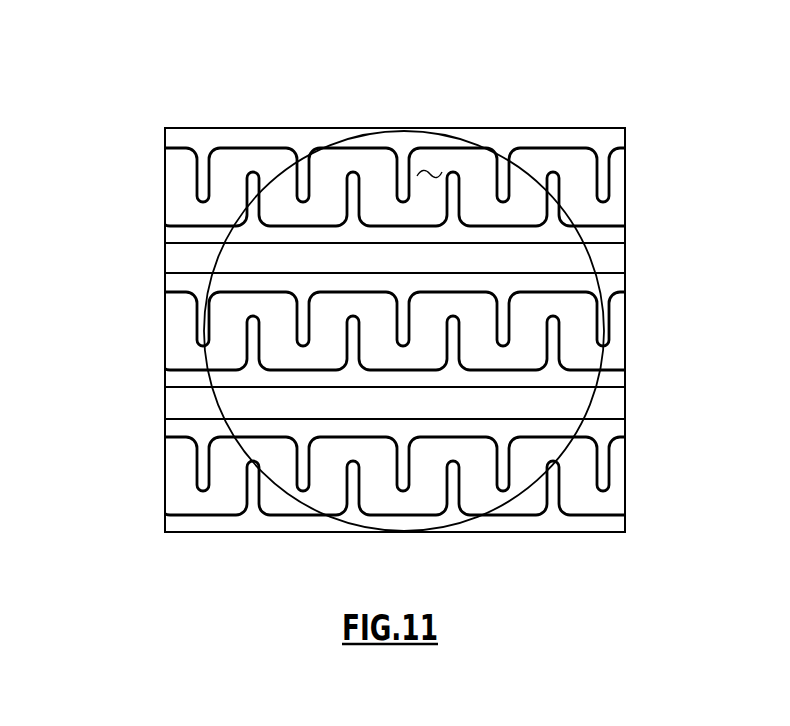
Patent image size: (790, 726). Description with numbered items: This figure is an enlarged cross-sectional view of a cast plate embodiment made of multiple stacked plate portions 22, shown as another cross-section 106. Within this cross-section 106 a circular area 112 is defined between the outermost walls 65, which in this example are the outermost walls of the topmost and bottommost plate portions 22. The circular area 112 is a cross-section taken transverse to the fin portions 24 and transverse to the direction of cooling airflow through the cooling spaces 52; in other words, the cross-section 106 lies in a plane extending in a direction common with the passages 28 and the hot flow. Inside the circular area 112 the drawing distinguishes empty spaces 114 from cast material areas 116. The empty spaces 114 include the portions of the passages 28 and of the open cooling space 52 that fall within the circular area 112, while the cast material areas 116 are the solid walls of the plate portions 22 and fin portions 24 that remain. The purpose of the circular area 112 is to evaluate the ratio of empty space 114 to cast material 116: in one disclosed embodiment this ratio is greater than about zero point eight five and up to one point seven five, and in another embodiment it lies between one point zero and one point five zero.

The cross-section 106 is at (150, 272).
The outermost walls 65 is at (292, 127).
The plate portions 22 is at (310, 238).
The passages 28 is at (487, 262).
The fin portions 24 is at (453, 197).
The cooling spaces 52 is at (433, 170).
The empty spaces 114 is at (407, 400).
The cast material areas 116 is at (282, 380).
The circular area 112 is at (313, 514).